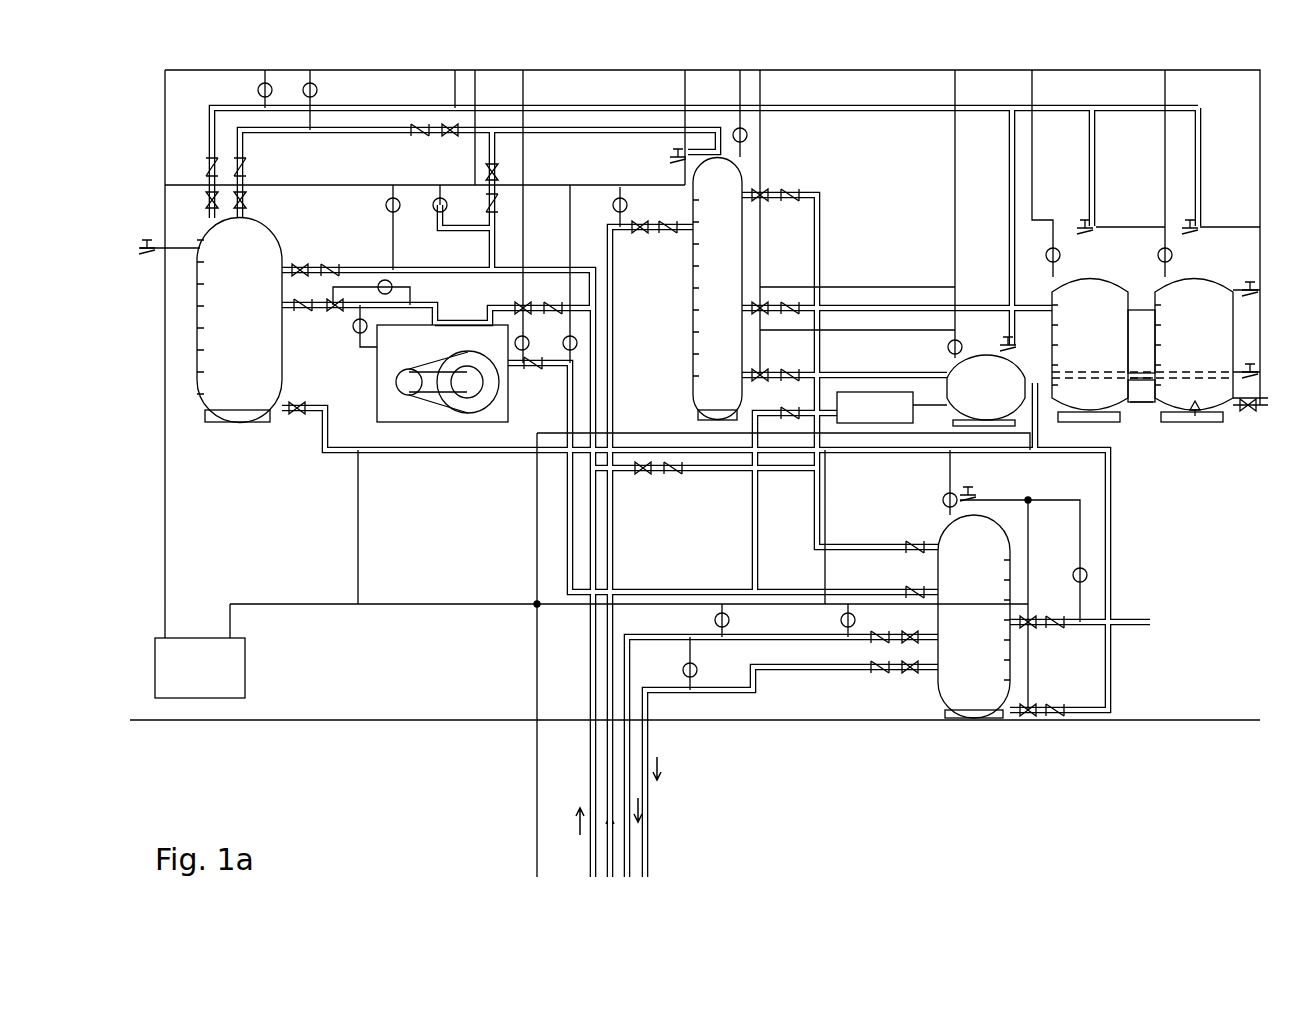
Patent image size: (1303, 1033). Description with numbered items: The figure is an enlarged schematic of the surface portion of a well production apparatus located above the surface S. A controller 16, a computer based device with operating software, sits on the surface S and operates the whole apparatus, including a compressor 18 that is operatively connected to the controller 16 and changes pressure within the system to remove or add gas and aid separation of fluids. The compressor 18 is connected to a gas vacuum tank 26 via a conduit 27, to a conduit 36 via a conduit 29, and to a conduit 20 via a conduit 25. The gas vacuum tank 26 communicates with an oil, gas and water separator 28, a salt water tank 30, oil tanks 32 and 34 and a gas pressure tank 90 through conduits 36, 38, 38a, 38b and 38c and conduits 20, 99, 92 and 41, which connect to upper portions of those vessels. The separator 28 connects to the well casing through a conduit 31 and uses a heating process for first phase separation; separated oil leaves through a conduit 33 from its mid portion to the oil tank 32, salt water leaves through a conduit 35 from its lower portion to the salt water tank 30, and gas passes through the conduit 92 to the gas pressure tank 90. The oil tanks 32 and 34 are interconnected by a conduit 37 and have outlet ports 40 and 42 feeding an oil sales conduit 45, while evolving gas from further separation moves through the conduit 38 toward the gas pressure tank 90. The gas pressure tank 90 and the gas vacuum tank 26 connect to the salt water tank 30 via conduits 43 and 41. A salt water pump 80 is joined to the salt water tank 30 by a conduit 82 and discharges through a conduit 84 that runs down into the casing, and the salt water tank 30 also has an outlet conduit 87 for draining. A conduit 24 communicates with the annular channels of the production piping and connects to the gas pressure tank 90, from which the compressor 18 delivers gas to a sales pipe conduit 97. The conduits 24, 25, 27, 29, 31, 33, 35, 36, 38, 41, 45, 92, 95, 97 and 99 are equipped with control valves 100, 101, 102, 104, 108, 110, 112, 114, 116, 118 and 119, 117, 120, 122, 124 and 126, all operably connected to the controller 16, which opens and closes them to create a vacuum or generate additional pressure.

The controller 16 is at (200, 668).
The compressor 18 is at (442, 373).
The conduit 20 is at (590, 528).
The conduit 24 is at (632, 752).
The conduit 25 is at (467, 268).
The gas vacuum tank 26 is at (239, 320).
The conduit 27 is at (375, 302).
The oil, gas and water separator 28 is at (717, 289).
The conduit 29 is at (475, 222).
The salt water tank 30 is at (986, 390).
The conduit 31 is at (603, 810).
The oil tank 32 is at (1090, 351).
The conduit 33 is at (847, 303).
The oil tank 34 is at (1194, 351).
The conduit 35 is at (878, 372).
The conduit 36 is at (253, 127).
The conduit 37 is at (1140, 308).
The conduit 38 is at (370, 104).
The conduit 38a is at (1007, 140).
The conduit 38b is at (1087, 137).
The conduit 38c is at (1200, 137).
The outlet port 40 is at (1140, 400).
The conduit 41 is at (323, 458).
The outlet port 42 is at (1197, 412).
The conduit 43 is at (1040, 437).
The oil sales conduit 45 is at (1252, 412).
The salt water pump 80 is at (875, 407).
The conduit 82 is at (930, 413).
The conduit 84 is at (753, 552).
The outlet conduit 87 is at (1140, 378).
The gas pressure tank 90 is at (974, 616).
The conduit 92 is at (820, 203).
The conduit 95 is at (808, 673).
The sales pipe conduit 97 is at (1133, 627).
The conduit 99 is at (727, 470).
The control valve 100 is at (903, 640).
The control valve 101 is at (293, 275).
The control valve 102 is at (337, 310).
The control valve 104 is at (495, 168).
The control valve 108 is at (640, 235).
The control valve 110 is at (763, 300).
The control valve 112 is at (748, 378).
The control valve 114 is at (245, 200).
The control valve 116 is at (205, 200).
The control valve 117 is at (1240, 412).
The control valve 118 is at (297, 420).
The control valve 119 is at (1027, 714).
The control valve 120 is at (765, 188).
The control valve 122 is at (910, 675).
The control valve 124 is at (1060, 714).
The control valve 126 is at (645, 475).
The surface S is at (350, 720).